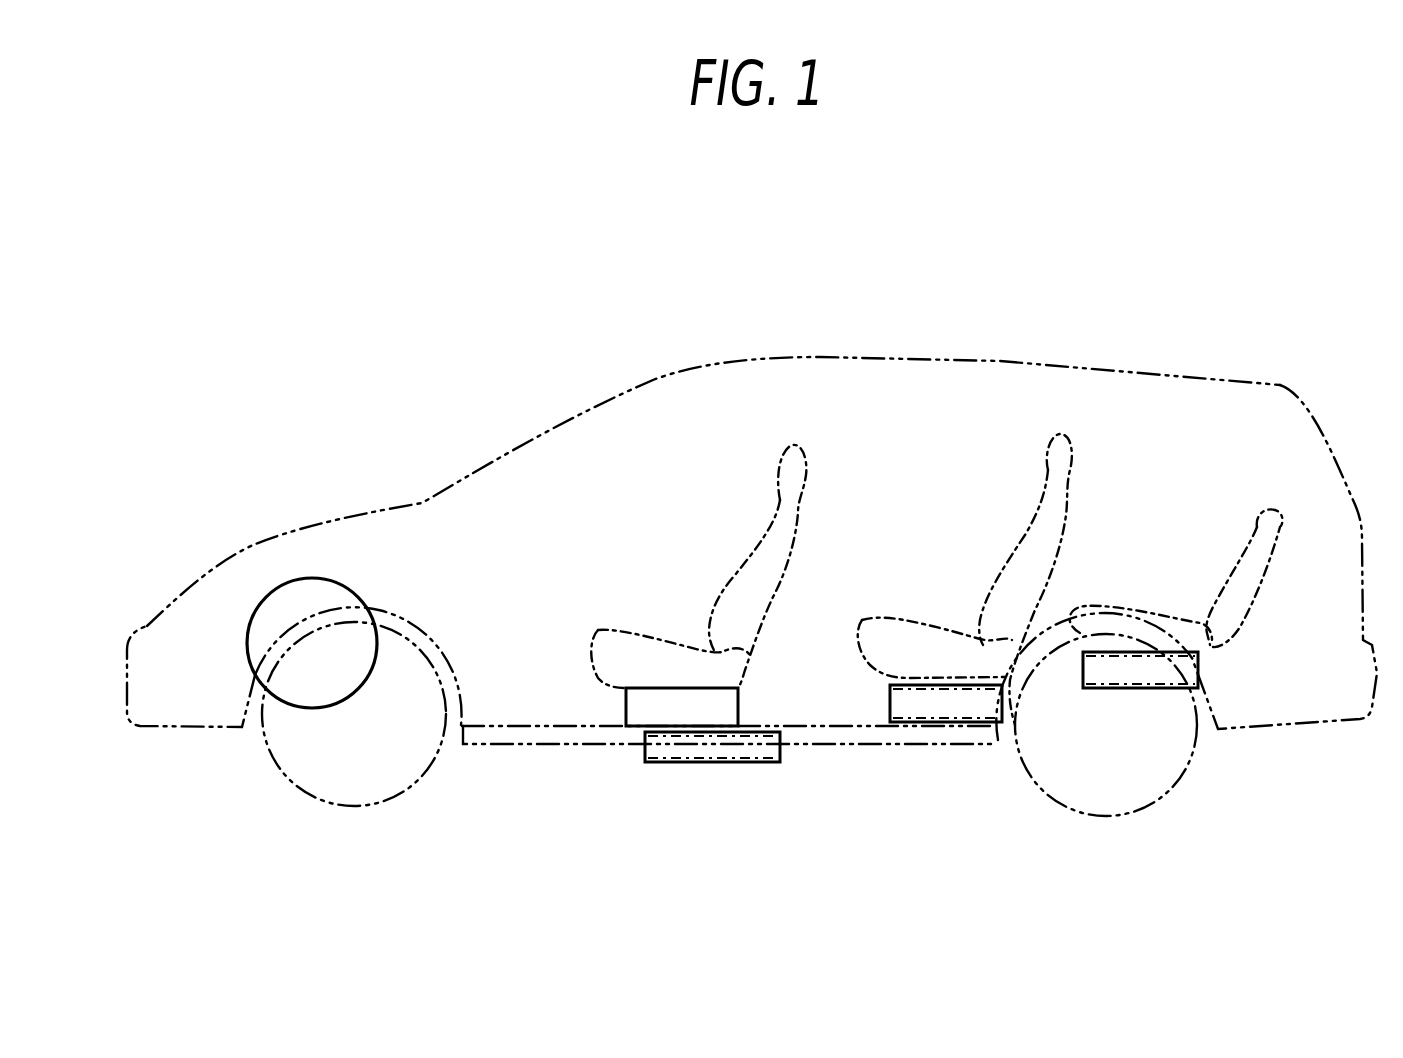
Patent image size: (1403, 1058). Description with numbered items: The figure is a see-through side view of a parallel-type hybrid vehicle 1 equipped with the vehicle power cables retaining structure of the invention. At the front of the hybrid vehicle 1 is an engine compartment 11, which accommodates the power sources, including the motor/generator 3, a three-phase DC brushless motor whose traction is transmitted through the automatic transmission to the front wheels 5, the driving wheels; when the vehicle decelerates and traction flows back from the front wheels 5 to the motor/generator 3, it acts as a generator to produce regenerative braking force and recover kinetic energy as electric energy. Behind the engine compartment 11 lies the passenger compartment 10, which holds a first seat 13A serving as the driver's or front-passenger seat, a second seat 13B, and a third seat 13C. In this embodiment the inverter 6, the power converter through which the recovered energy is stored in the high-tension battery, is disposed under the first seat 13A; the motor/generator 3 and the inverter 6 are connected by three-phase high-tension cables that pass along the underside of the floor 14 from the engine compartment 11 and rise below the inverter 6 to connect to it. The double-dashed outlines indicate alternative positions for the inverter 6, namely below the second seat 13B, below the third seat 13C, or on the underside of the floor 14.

The hybrid vehicle 1 is at (912, 355).
The passenger compartment 10 is at (872, 430).
The motor/generator 3 is at (290, 582).
The engine compartment 11 is at (356, 570).
The front wheels 5 is at (330, 807).
The floor 14 is at (487, 725).
The first seat 13A is at (650, 642).
The second seat 13B is at (907, 622).
The third seat 13C is at (1134, 610).
The inverter 6 is at (626, 708).